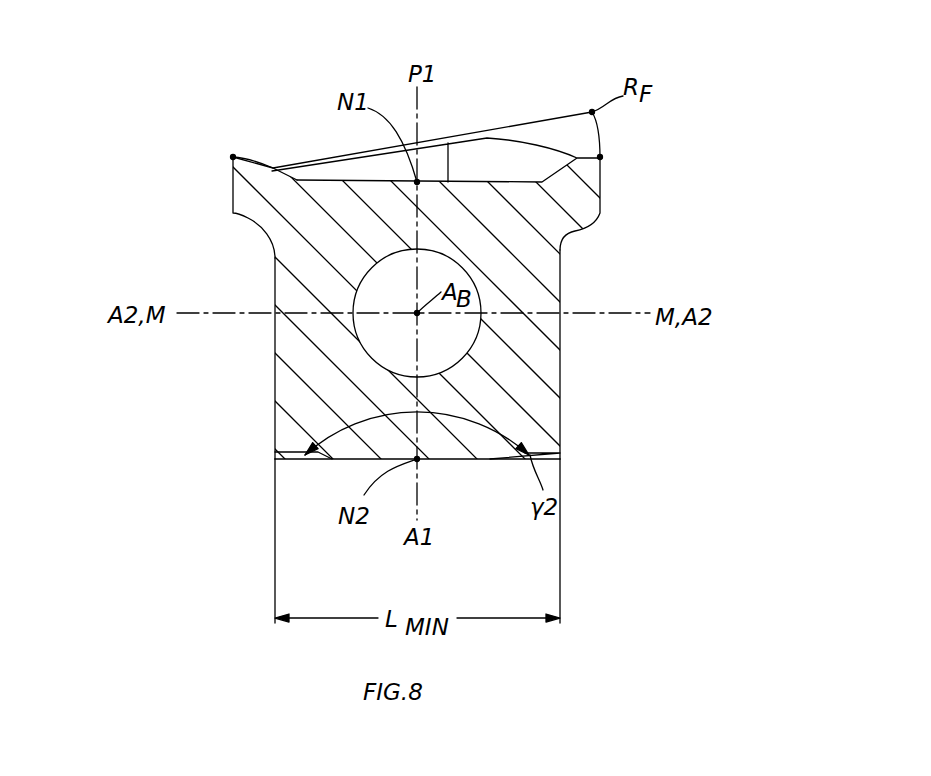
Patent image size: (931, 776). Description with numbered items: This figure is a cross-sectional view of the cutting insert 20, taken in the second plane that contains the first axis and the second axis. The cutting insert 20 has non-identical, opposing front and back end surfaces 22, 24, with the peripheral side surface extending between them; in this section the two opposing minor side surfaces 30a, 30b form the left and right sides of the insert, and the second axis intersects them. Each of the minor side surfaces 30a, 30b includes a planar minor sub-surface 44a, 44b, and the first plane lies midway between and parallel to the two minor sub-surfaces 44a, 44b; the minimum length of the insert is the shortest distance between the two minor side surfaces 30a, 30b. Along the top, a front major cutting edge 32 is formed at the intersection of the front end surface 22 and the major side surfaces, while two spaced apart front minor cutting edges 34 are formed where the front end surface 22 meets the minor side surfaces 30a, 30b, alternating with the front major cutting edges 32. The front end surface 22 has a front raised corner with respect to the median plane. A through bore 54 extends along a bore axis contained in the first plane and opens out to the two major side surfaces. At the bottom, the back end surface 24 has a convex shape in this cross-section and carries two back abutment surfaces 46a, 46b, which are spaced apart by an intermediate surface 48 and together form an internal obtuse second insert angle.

The cutting insert 20 is at (575, 93).
The front end surface 22 is at (487, 160).
The back end surface 24 is at (330, 460).
The minor side surface 30a is at (600, 193).
The minor side surface 30b is at (233, 197).
The front major cutting edge 32 is at (530, 120).
The front minor cutting edge 34 is at (233, 157).
The planar minor sub-surface 44a is at (560, 286).
The planar minor sub-surface 44b is at (275, 273).
The back abutment surface 46a is at (302, 453).
The back abutment surface 46b is at (548, 457).
The intermediate surface 48 is at (450, 460).
The through bore 54 is at (408, 349).